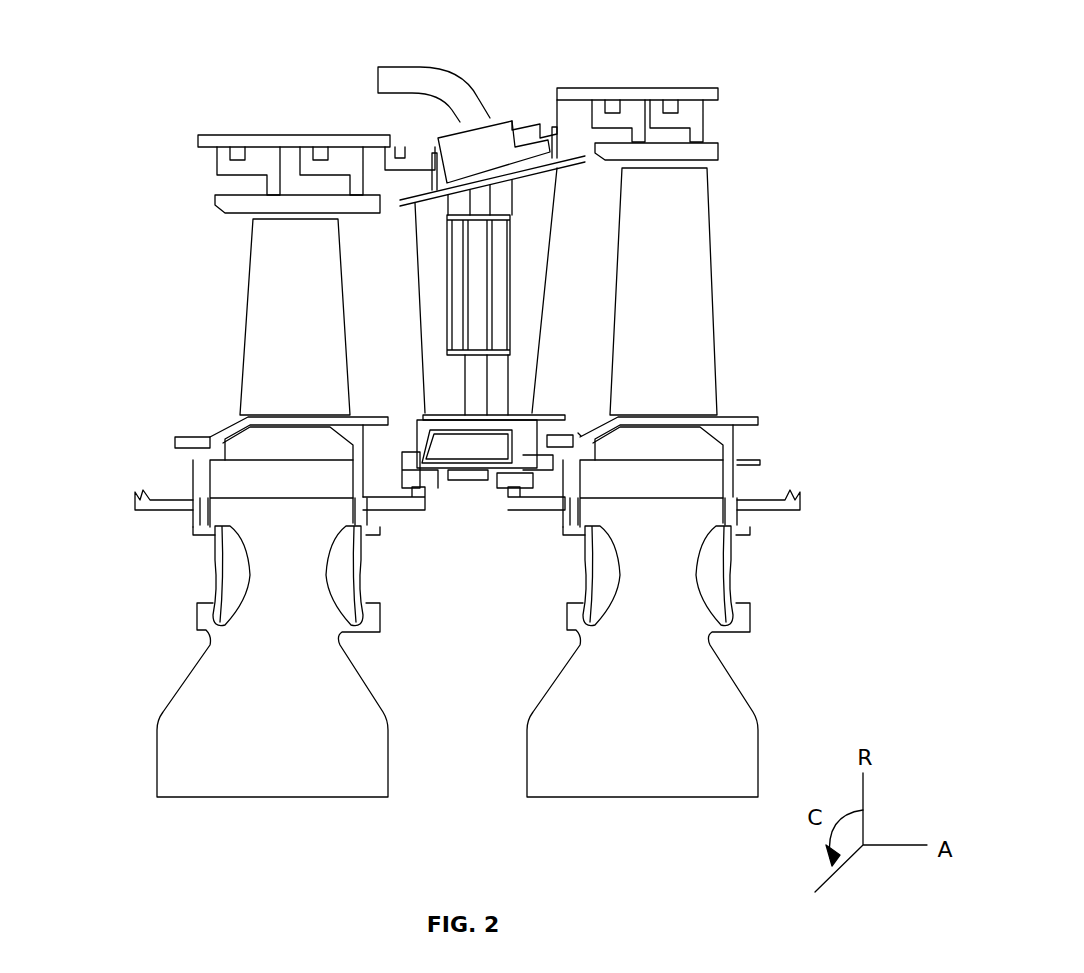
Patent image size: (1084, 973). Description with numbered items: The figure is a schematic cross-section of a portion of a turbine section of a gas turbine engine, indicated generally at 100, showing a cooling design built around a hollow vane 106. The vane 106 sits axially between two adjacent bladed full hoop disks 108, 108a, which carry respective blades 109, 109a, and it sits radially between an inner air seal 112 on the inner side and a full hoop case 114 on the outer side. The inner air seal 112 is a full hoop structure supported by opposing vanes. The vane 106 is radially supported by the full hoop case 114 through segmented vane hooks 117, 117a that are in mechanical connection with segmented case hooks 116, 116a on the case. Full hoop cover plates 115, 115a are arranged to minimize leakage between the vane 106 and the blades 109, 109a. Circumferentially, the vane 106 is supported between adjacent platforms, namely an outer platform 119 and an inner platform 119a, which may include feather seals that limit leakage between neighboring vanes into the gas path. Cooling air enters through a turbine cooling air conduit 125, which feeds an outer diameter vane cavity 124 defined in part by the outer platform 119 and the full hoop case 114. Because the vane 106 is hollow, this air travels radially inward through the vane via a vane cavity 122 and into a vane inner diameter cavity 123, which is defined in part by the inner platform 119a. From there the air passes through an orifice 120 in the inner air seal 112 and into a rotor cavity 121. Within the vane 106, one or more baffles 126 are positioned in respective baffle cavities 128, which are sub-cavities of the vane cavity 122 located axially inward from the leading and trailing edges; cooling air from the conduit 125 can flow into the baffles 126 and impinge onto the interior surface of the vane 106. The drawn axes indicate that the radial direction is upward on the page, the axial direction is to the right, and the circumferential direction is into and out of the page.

The turbine section 100 is at (133, 92).
The vane 106 is at (523, 245).
The bladed full hoop disk 108 is at (745, 730).
The bladed full hoop disk 108a is at (170, 757).
The blade 109 is at (700, 268).
The blade 109a is at (248, 285).
The inner air seal 112 is at (560, 477).
The full hoop case 114 is at (718, 93).
The full hoop cover plate 115 is at (717, 543).
The full hoop cover plate 115a is at (350, 575).
The segmented case hook 116 is at (497, 138).
The segmented case hook 116a is at (387, 150).
The segmented vane hook 117 is at (537, 117).
The segmented vane hook 117a is at (420, 150).
The outer platform 119 is at (575, 137).
The inner platform 119a is at (423, 415).
The orifice 120 is at (457, 490).
The rotor cavity 121 is at (463, 677).
The vane cavity 122 is at (512, 332).
The vane inner diameter cavity 123 is at (464, 445).
The outer diameter vane cavity 124 is at (490, 117).
The turbine cooling air conduit 125 is at (390, 80).
The baffle 126 is at (460, 277).
The baffle cavity 128 is at (460, 370).